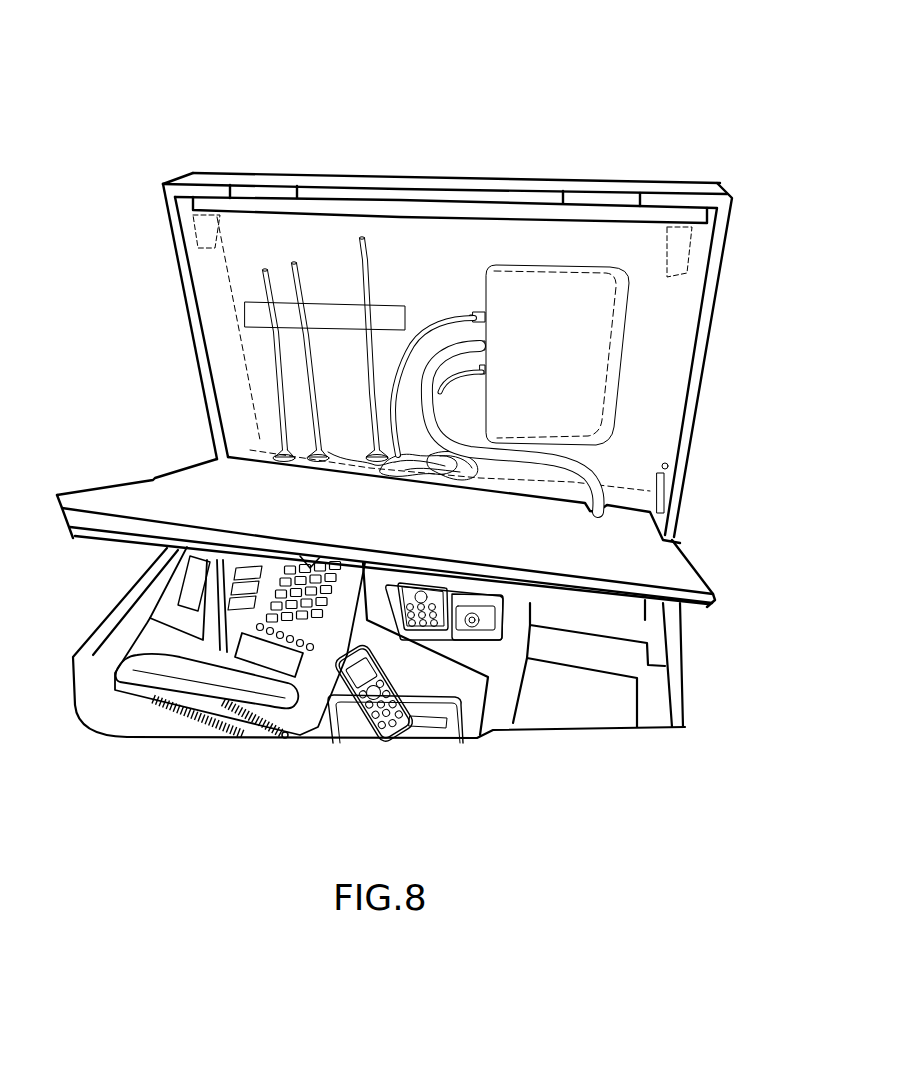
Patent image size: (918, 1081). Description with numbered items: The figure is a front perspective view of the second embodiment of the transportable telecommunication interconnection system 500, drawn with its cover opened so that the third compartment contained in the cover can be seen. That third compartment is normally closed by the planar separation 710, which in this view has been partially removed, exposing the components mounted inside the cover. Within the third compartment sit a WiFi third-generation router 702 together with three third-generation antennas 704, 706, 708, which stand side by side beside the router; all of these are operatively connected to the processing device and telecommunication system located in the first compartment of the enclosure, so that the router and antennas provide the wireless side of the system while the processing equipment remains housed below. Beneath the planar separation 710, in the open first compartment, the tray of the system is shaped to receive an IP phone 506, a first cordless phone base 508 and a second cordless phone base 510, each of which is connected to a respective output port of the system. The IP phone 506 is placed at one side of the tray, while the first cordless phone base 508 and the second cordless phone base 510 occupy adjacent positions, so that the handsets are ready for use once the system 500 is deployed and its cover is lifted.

The transportable telecommunication interconnection system 500 is at (376, 81).
The WiFi 3G router 702 is at (542, 340).
The 3G antenna 704 is at (278, 382).
The 3G antenna 706 is at (313, 393).
The 3G antenna 708 is at (372, 393).
The planar separation 710 is at (623, 577).
The IP phone 506 is at (207, 682).
The first cordless phone base 508 is at (340, 718).
The second cordless phone base 510 is at (398, 615).